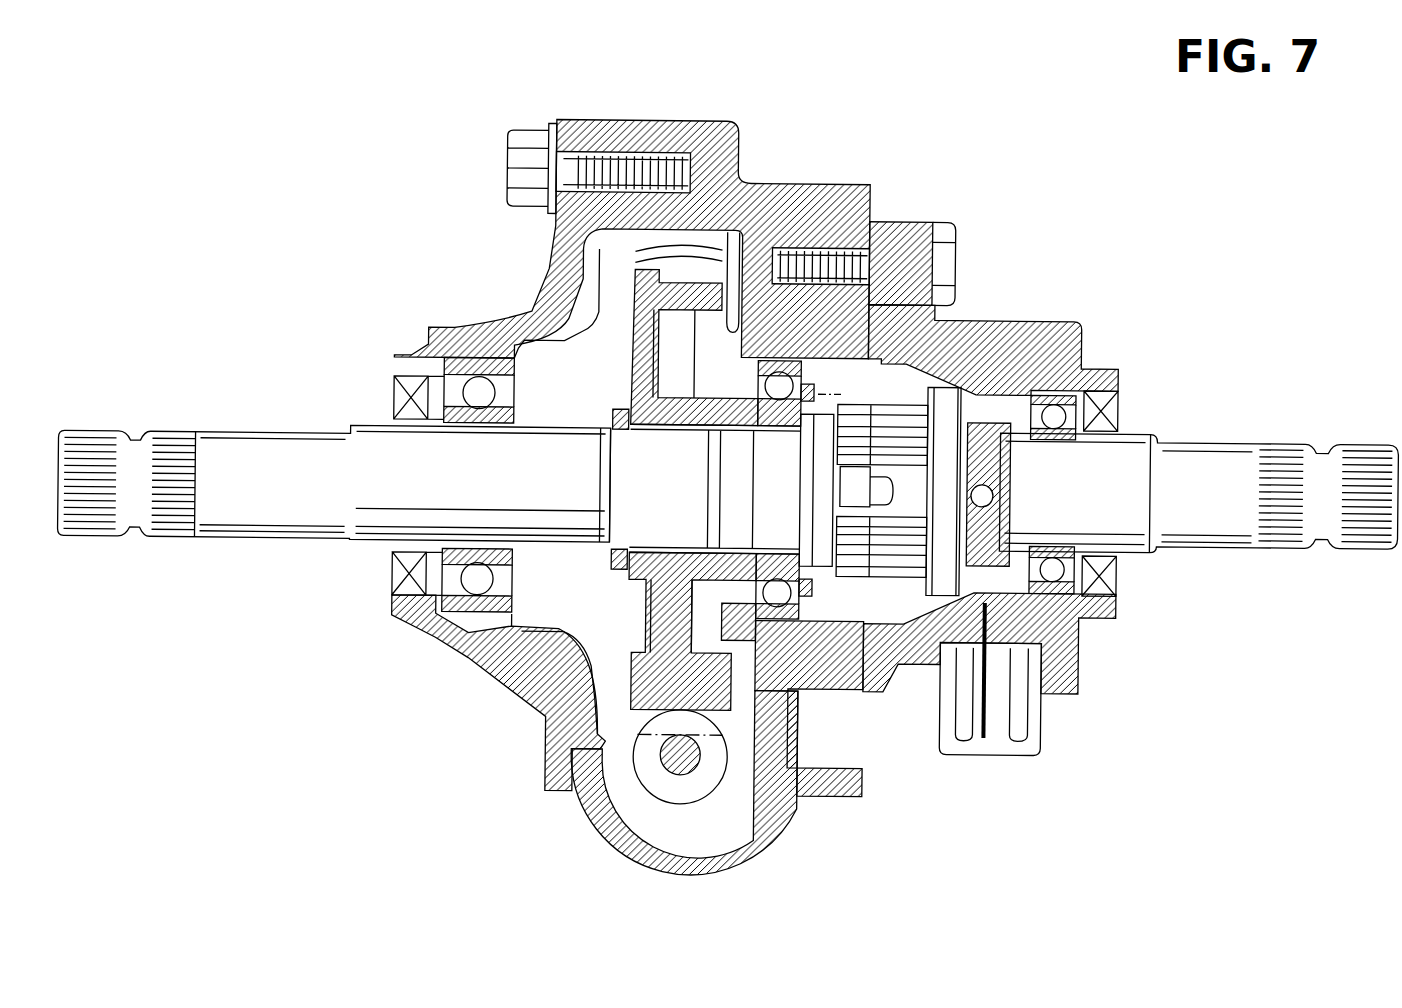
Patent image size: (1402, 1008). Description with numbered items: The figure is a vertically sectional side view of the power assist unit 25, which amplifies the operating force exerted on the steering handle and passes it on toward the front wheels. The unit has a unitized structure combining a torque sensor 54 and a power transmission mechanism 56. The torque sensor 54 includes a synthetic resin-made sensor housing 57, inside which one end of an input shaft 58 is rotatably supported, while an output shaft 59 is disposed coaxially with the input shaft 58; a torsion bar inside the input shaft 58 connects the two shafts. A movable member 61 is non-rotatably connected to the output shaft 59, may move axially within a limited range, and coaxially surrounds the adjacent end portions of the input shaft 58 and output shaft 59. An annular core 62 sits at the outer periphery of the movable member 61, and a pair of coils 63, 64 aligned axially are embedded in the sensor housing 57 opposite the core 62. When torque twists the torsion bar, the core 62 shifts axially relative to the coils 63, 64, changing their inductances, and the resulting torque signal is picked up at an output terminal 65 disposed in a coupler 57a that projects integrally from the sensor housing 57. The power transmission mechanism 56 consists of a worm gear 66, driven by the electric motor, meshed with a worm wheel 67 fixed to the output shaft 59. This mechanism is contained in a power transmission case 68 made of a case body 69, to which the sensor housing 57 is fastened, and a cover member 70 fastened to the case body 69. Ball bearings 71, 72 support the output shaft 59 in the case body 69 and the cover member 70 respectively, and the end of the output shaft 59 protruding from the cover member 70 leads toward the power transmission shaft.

The power assist unit 25 is at (640, 508).
The torque sensor 54 is at (1024, 509).
The power transmission mechanism 56 is at (623, 620).
The sensor housing 57 is at (1080, 323).
The coupler 57a is at (1047, 723).
The input shaft 58 is at (1203, 462).
The output shaft 59 is at (262, 453).
The movable member 61 is at (890, 575).
The annular core 62 is at (947, 540).
The coil 63 is at (977, 323).
The coil 64 is at (937, 322).
The output terminal 65 is at (987, 735).
The worm gear 66 is at (717, 777).
The worm wheel 67 is at (724, 252).
The power transmission case 68 is at (594, 735).
The case body 69 is at (612, 847).
The cover member 70 is at (550, 777).
The ball bearing 71 is at (773, 625).
The ball bearing 72 is at (465, 332).